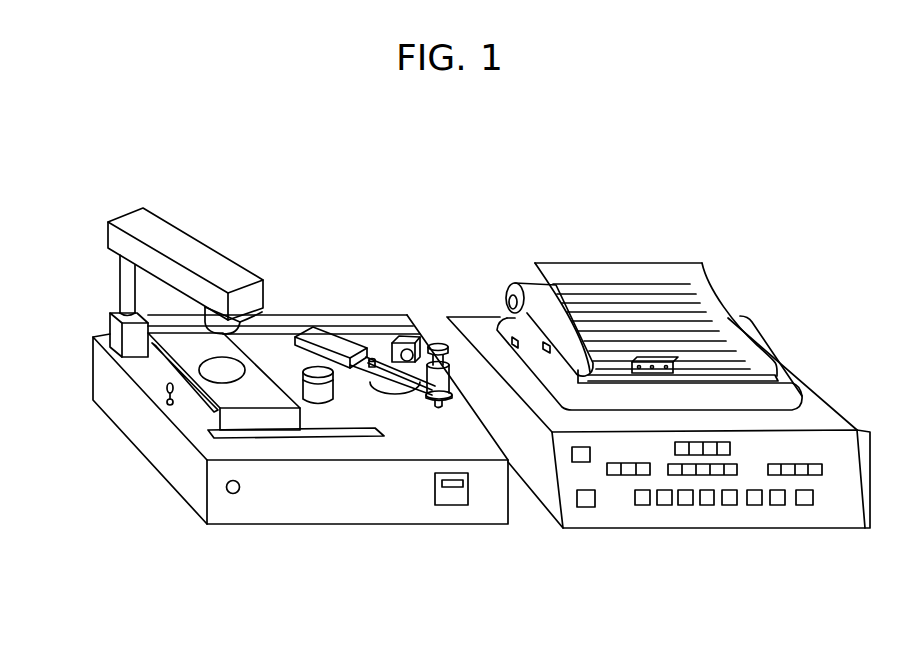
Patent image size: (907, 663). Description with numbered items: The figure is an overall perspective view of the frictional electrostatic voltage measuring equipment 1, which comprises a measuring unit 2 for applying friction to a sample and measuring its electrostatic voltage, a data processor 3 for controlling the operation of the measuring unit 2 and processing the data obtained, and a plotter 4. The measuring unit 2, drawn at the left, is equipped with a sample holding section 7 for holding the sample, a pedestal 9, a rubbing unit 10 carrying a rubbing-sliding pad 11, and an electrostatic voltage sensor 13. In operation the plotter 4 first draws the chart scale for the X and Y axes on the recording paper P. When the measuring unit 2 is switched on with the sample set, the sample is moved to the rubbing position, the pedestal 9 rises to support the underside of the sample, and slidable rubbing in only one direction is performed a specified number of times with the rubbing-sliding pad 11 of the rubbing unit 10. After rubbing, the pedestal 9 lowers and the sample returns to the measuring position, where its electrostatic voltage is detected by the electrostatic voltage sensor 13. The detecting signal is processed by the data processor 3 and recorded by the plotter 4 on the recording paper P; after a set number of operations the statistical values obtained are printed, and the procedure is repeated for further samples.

The frictional electrostatic voltage measuring equipment 1 is at (417, 238).
The measuring unit 2 is at (260, 517).
The data processor 3 is at (604, 520).
The plotter 4 is at (740, 330).
The sample holding section 7 is at (200, 413).
The pedestal 9 is at (328, 373).
The rubbing unit 10 is at (404, 397).
The rubbing-sliding pad 11 is at (318, 350).
The electrostatic voltage sensor 13 is at (235, 323).
The recording paper P is at (624, 268).